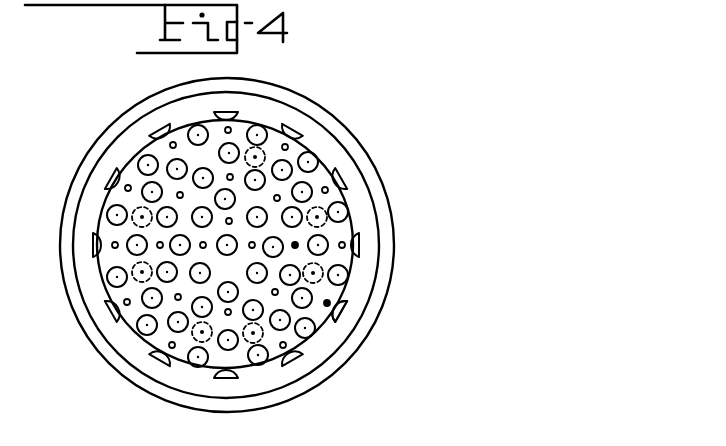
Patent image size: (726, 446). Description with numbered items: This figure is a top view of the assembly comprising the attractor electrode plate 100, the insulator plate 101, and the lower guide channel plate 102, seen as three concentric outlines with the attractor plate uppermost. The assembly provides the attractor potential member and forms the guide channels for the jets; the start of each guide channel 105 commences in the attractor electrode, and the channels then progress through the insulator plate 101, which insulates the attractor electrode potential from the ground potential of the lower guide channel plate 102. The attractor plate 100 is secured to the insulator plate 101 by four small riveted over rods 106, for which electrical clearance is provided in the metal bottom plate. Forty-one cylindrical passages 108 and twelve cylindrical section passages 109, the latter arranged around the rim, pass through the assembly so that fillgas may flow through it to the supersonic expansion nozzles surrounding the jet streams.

The attractor electrode plate 100 is at (357, 223).
The insulator plate 101 is at (383, 230).
The lower guide channel plate 102 is at (397, 258).
The start of guide channel 105 is at (288, 147).
The riveted over rod 106 is at (257, 153).
The cylindrical passage 108 is at (312, 337).
The cylindrical section passage 109 is at (350, 318).